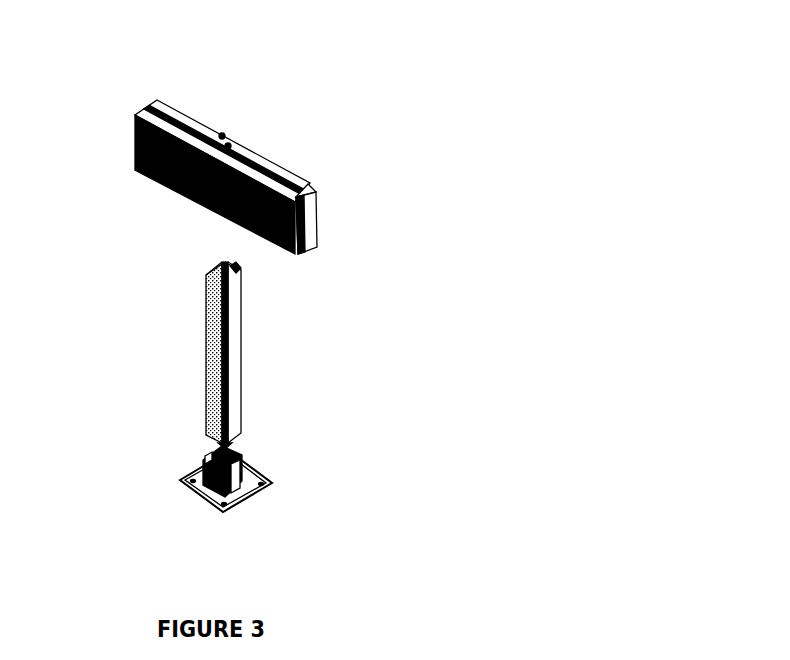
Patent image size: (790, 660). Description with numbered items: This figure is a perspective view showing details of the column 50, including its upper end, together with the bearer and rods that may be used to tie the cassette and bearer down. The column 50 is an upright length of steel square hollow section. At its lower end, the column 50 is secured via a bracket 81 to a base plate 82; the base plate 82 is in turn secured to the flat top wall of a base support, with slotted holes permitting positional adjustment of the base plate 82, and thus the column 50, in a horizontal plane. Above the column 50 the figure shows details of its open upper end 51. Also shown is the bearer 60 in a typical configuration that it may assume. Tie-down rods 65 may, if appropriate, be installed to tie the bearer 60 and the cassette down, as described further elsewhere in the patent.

The column 50 is at (197, 335).
The open upper end 51 is at (242, 272).
The bearer 60 is at (313, 222).
The tie-down rods 65 is at (229, 144).
The bracket 81 is at (247, 457).
The base plate 82 is at (268, 477).